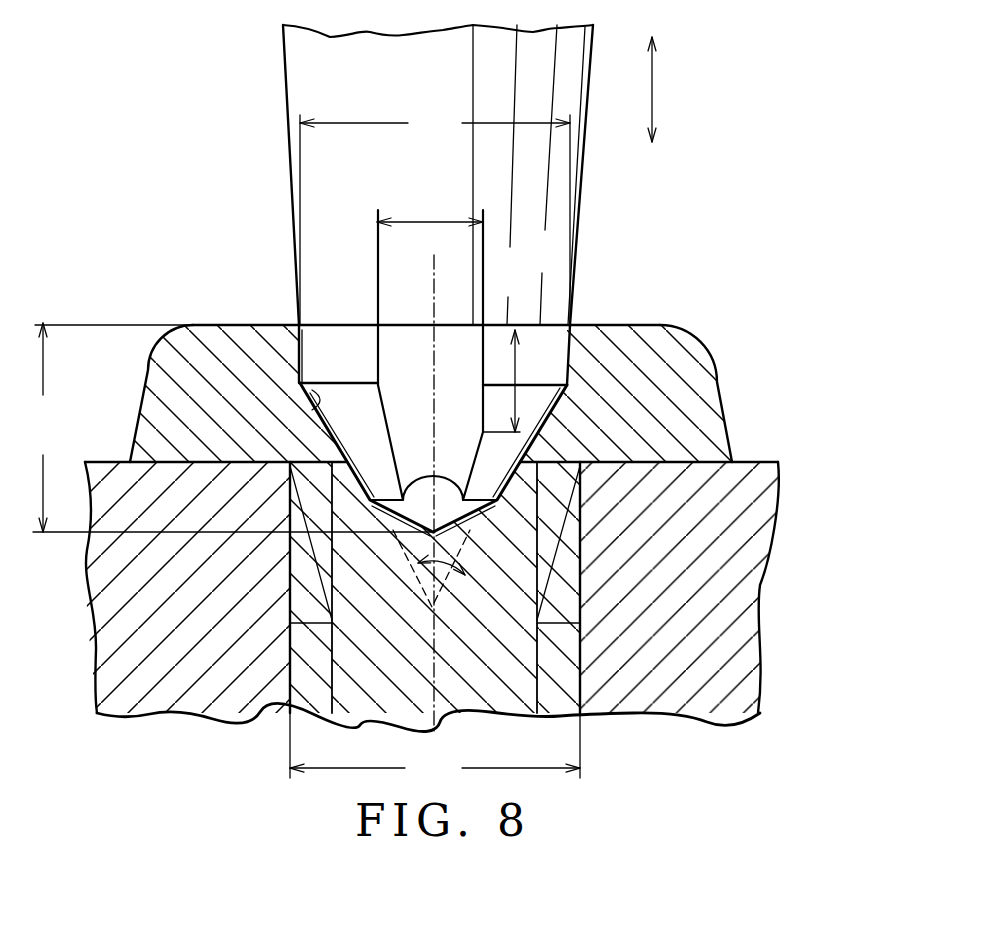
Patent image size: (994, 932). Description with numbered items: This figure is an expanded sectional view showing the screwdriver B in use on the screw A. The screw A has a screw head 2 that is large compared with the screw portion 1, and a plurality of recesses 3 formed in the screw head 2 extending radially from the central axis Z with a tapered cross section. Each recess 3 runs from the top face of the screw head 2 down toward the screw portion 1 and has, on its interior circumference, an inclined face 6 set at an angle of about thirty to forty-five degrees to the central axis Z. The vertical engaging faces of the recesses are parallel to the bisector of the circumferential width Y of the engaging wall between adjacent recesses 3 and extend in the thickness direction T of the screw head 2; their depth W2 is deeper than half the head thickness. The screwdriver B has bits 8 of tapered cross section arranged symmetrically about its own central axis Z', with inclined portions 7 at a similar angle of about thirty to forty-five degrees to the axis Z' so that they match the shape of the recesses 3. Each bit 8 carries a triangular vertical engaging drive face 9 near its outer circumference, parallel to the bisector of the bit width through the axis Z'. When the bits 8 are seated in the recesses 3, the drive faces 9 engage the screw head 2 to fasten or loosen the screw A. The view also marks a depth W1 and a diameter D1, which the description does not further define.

The screw portion 1 is at (583, 557).
The screw head 2 is at (660, 326).
The recesses 3 is at (297, 305).
The inclined faces 6 is at (347, 413).
The inclined portions 7 is at (288, 537).
The bits 8 is at (382, 345).
The vertical engaging drive face 9 is at (483, 367).
The screw A is at (225, 325).
The screwdriver B is at (340, 340).
The central axis Z is at (536, 510).
The central axis Z' is at (585, 226).
The thickness direction T is at (664, 89).
The depth dimension W1 is at (230, 427).
The depth W2 is at (537, 338).
The circumferential width Y is at (430, 207).
The hole diameter D1 is at (435, 749).